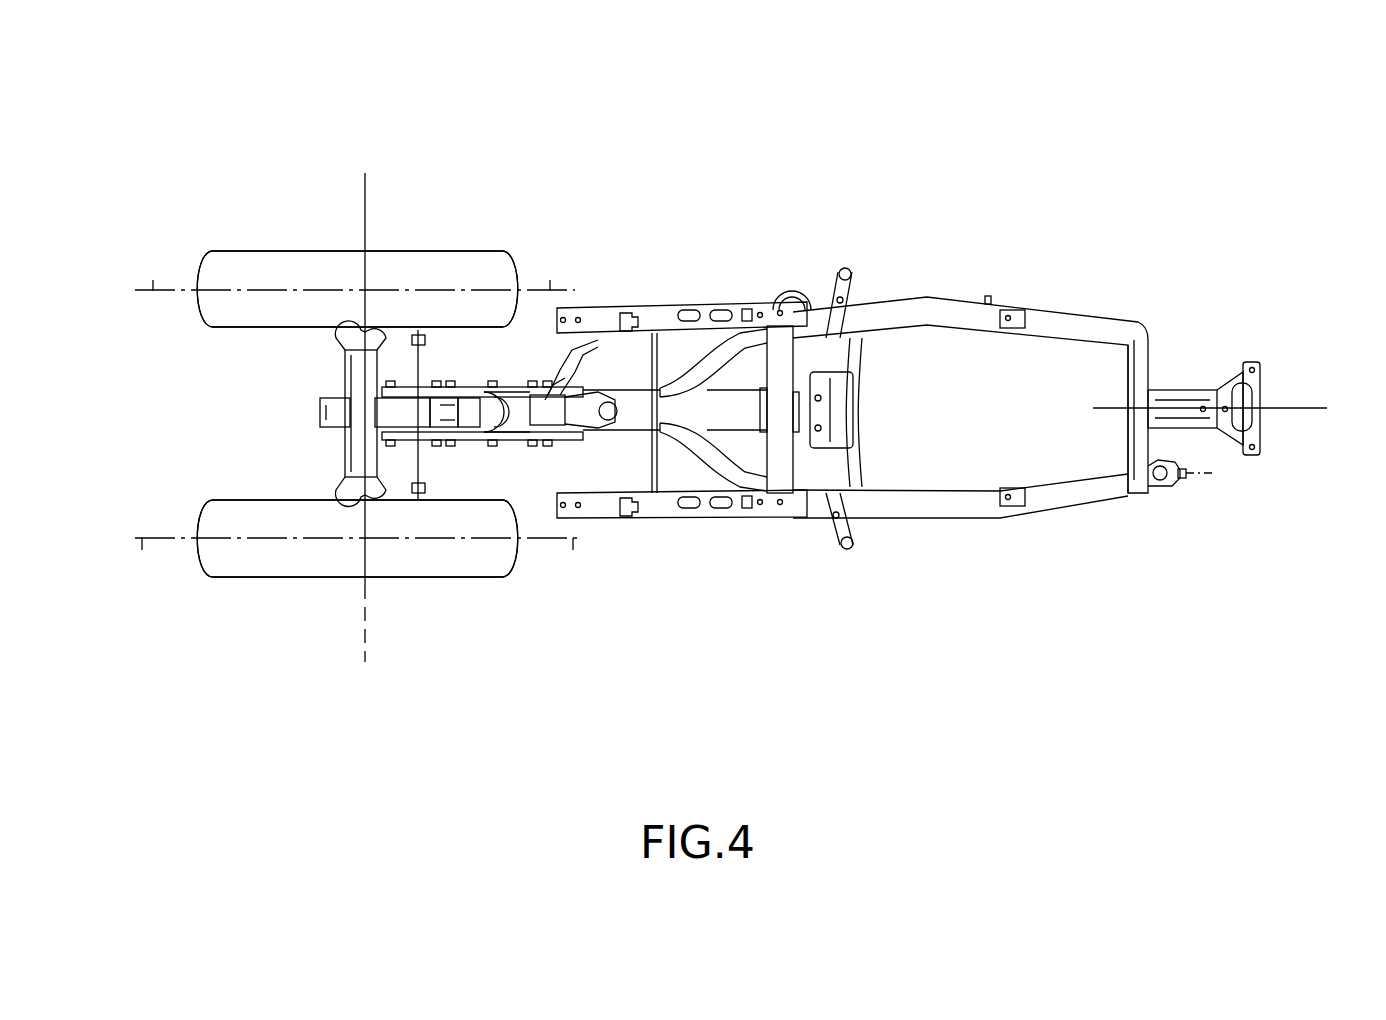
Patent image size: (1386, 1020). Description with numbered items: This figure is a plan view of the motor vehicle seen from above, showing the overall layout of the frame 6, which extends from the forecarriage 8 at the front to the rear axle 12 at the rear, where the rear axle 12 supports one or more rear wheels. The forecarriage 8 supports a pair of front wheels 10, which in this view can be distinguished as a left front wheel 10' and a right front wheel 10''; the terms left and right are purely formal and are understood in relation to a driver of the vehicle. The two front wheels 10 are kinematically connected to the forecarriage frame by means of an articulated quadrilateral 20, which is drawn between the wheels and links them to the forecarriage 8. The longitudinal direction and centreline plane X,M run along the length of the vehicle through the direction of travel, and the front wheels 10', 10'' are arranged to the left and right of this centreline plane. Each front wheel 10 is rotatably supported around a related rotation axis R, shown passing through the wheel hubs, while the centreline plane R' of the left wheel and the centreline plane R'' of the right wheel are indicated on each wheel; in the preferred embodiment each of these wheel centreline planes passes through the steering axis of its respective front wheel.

The front wheels 10 is at (356, 409).
The left front wheel 10' is at (357, 538).
The right front wheel 10'' is at (357, 289).
The articulated quadrilateral 20 is at (320, 450).
The forecarriage 8 is at (617, 532).
The frame 6 is at (909, 532).
The rear axle 12 is at (1193, 496).
The rotation axis R is at (396, 413).
The centreline plane of the left wheel R' is at (340, 582).
The centreline plane of the right wheel R'' is at (350, 244).
The longitudinal direction and centreline plane X,M is at (268, 408).